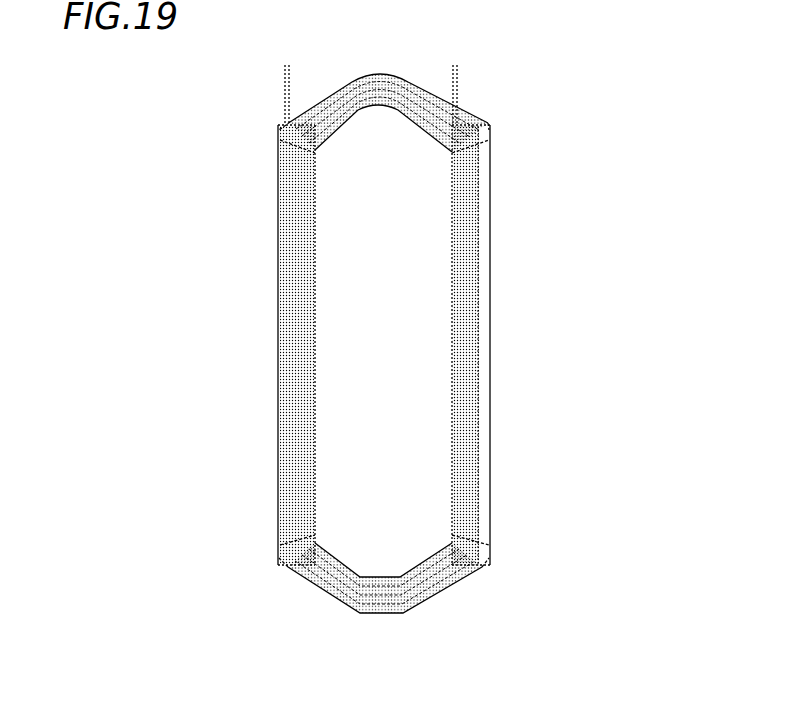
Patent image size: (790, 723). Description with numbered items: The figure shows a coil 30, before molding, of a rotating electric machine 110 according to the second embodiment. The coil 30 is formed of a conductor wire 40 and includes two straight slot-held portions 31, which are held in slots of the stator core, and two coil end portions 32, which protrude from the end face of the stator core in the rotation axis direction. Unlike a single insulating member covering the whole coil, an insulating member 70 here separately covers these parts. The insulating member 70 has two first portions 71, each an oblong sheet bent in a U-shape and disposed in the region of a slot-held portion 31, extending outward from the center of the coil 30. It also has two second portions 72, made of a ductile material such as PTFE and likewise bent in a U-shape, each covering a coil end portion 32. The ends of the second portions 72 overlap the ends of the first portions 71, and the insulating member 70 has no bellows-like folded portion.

The rotating electric machine 110 is at (520, 108).
The insulating member 70 is at (386, 344).
The first portion 71 is at (278, 283).
The second portion 72 is at (403, 72).
The coil 30 is at (457, 330).
The conductor wire 40 is at (385, 302).
The slot-held portion 31 is at (480, 400).
The coil end portion 32 is at (347, 78).